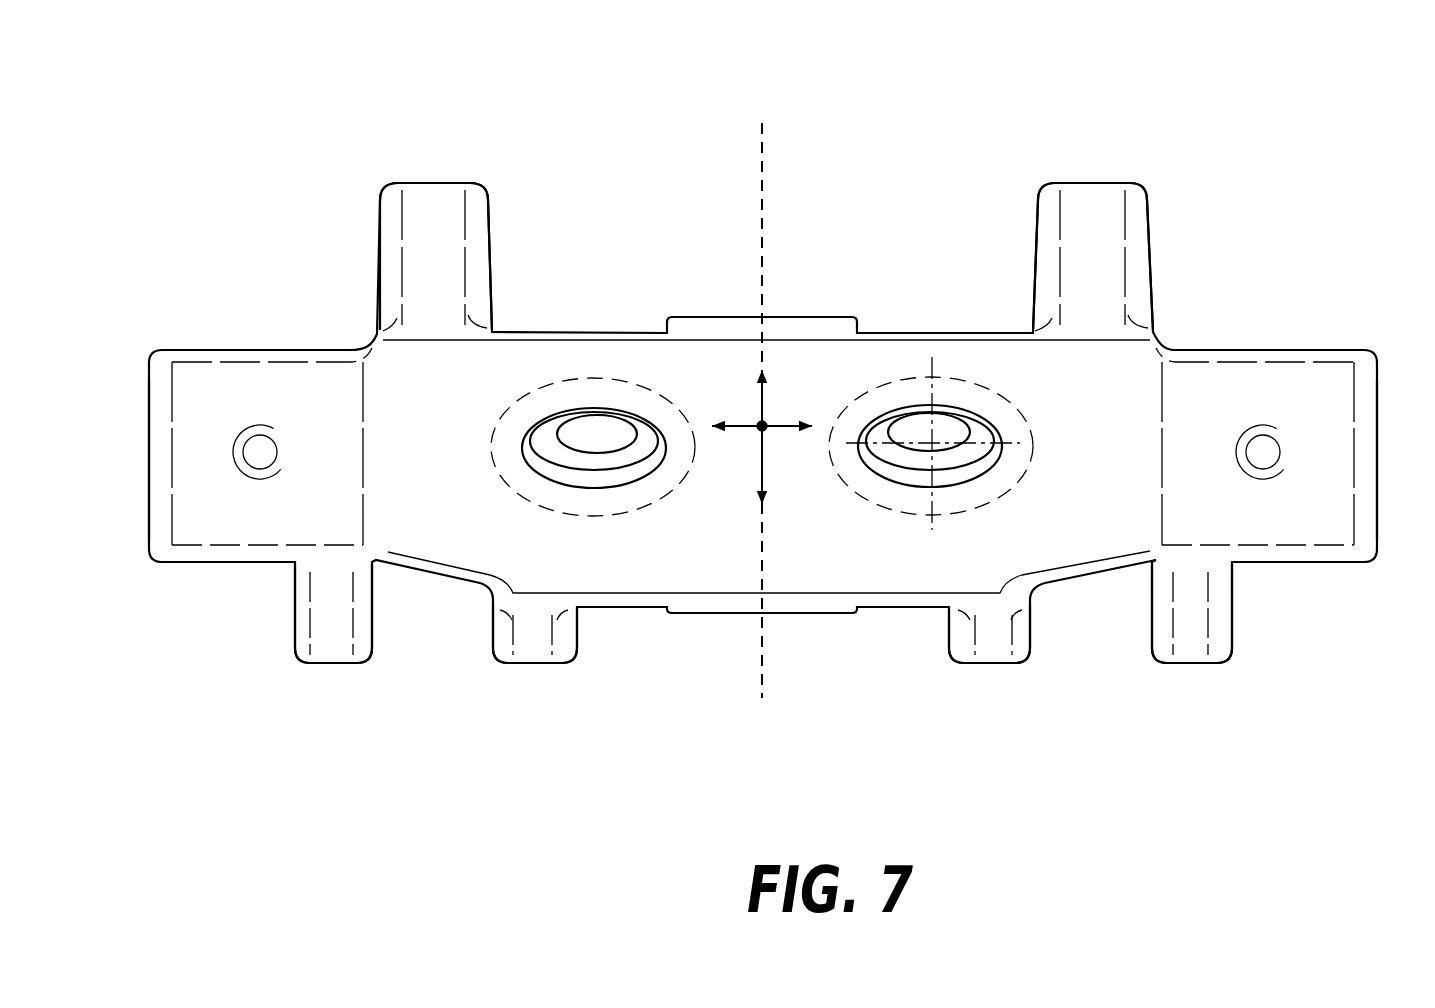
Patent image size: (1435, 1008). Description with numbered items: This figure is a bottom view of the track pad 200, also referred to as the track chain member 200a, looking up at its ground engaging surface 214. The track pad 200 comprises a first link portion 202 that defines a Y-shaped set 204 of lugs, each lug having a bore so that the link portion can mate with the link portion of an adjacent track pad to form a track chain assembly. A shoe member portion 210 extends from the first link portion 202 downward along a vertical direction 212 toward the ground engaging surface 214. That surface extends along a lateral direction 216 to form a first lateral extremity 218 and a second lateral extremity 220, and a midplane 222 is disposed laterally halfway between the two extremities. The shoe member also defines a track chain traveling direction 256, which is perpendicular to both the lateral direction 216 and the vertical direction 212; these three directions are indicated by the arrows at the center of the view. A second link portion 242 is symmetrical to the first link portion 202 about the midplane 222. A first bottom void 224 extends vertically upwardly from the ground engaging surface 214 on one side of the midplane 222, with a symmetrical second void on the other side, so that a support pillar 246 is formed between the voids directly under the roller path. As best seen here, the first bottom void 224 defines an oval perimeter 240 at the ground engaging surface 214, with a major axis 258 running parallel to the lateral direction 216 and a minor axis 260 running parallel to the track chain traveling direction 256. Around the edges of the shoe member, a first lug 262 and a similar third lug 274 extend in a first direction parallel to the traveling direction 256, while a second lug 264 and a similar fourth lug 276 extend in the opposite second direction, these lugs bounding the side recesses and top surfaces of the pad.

The track pad 200 is at (763, 336).
The track chain member 200a is at (763, 336).
The first link portion 202 is at (1160, 322).
The Y-shaped set of lugs 204 is at (1028, 662).
The shoe member portion 210 is at (1302, 567).
The vertical direction 212 is at (764, 428).
The ground engaging surface 214 is at (1089, 527).
The lateral direction 216 is at (793, 423).
The first lateral extremity 218 is at (1377, 510).
The second lateral extremity 220 is at (148, 523).
The midplane 222 is at (763, 675).
The first bottom void 224 is at (920, 470).
The oval perimeter 240 is at (1030, 470).
The second link portion 242 is at (538, 667).
The support pillar 246 is at (707, 477).
The track chain traveling direction 256 is at (762, 465).
The major axis 258 is at (1007, 440).
The minor axis 260 is at (970, 416).
The first lug 262 is at (1203, 647).
The second lug 264 is at (1100, 182).
The third lug 274 is at (348, 650).
The fourth lug 276 is at (442, 207).